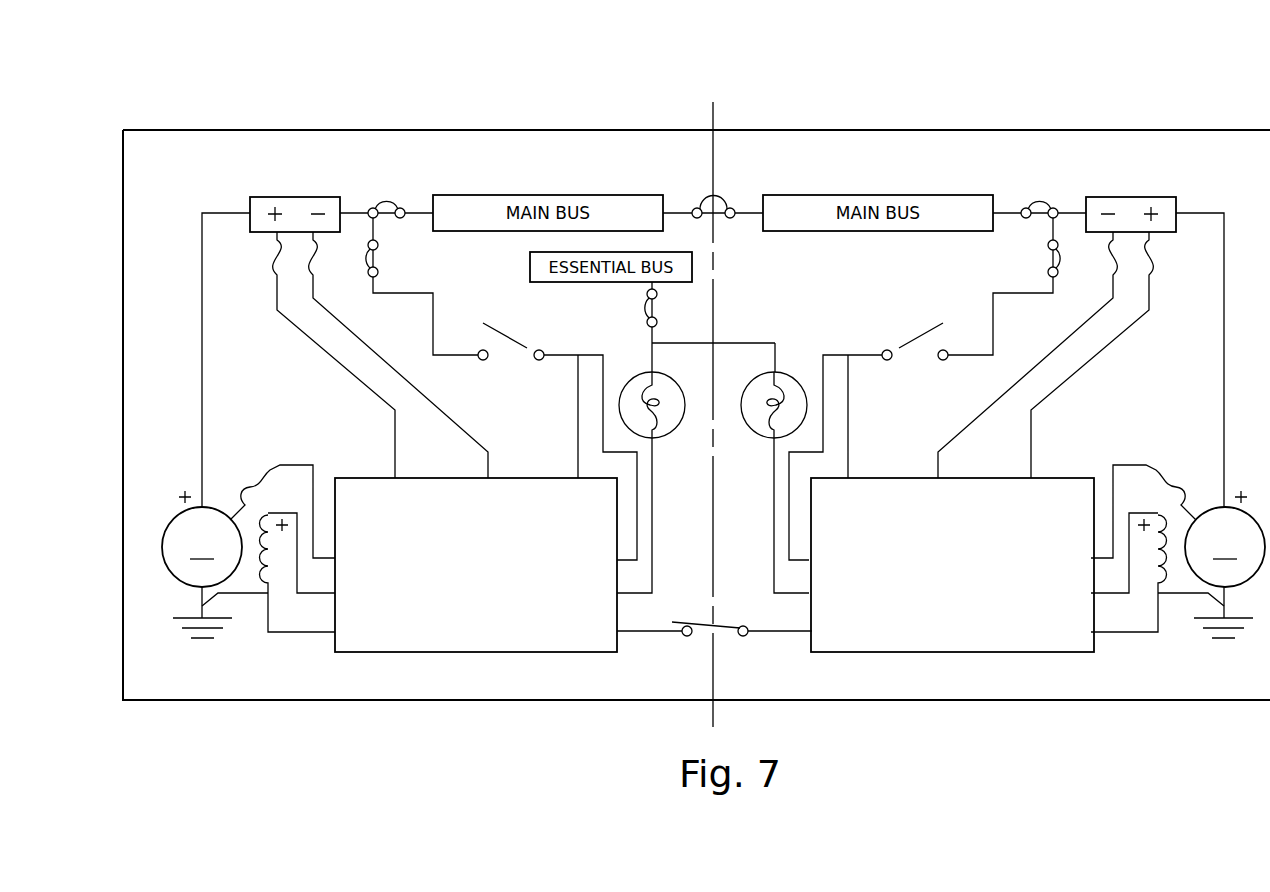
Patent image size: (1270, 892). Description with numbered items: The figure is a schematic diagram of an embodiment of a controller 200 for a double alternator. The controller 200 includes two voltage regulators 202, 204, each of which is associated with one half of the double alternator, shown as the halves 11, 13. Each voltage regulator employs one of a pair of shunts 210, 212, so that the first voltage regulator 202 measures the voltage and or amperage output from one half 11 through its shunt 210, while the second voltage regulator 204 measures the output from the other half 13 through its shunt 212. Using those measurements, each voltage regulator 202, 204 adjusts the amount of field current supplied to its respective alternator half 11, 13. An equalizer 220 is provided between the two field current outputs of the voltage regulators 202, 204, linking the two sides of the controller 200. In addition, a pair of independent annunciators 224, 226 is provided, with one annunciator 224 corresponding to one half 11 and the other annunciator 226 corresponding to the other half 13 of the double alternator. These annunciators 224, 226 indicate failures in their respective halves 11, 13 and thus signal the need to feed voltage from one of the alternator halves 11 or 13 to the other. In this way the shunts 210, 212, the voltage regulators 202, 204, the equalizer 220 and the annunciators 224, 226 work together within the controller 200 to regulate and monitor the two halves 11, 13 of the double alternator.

The controller 200 is at (985, 715).
The voltage regulator 202 is at (459, 574).
The voltage regulator 204 is at (934, 574).
The shunt 210 is at (332, 205).
The shunt 212 is at (1162, 205).
The half of the alternator 11 is at (202, 539).
The half of the alternator 13 is at (1225, 539).
The equalizer 220 is at (650, 633).
The annunciator 224 is at (633, 388).
The annunciator 226 is at (793, 390).